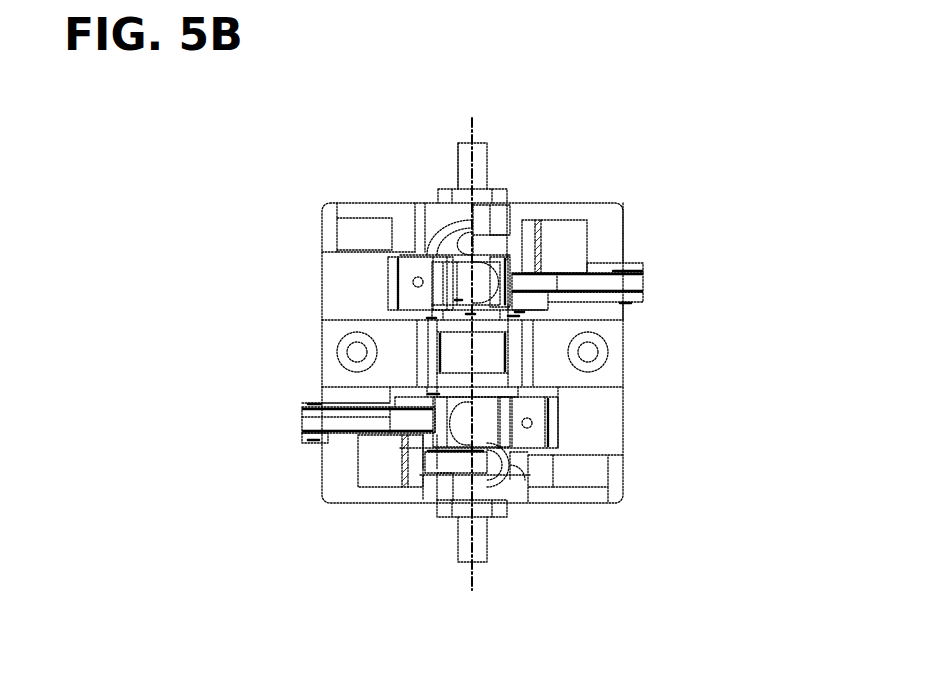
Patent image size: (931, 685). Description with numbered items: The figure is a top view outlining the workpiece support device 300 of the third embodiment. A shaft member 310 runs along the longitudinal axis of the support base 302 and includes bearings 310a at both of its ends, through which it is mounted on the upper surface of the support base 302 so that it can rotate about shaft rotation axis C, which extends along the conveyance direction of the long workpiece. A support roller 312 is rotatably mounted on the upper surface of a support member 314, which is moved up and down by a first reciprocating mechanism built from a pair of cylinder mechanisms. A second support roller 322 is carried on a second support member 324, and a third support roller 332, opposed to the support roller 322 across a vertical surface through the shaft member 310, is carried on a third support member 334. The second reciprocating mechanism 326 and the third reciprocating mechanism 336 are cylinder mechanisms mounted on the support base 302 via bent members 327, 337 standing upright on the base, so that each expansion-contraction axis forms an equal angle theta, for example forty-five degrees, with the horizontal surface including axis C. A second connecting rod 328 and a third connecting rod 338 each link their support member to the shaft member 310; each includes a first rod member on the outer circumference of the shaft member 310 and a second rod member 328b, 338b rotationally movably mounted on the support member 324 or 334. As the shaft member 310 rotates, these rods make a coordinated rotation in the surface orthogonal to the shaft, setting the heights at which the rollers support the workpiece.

The workpiece support device 300 is at (618, 153).
The support base 302 is at (345, 488).
The shaft member 310 is at (462, 173).
The bearings 310a is at (500, 195).
The support roller 312 is at (455, 343).
The support member 314 is at (520, 368).
The support roller 322 is at (482, 432).
The support member 324 is at (535, 410).
The reciprocating mechanism 326 is at (447, 462).
The bent member 327 is at (590, 495).
The connecting rod 328 is at (328, 435).
The second rod member 328b is at (352, 408).
The support roller 332 is at (457, 270).
The support member 334 is at (412, 293).
The reciprocating mechanism 336 is at (508, 243).
The bent member 337 is at (348, 208).
The connecting rod 338 is at (618, 268).
The second rod member 338b is at (597, 298).